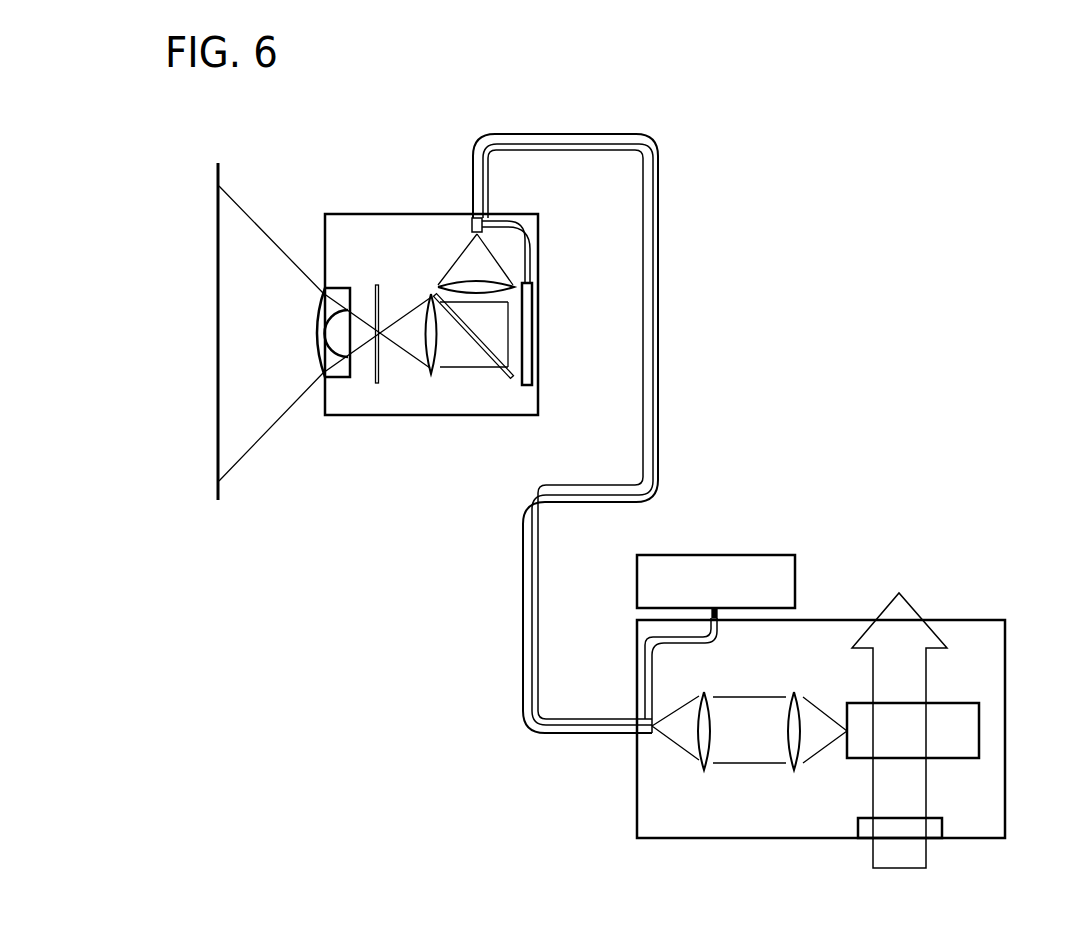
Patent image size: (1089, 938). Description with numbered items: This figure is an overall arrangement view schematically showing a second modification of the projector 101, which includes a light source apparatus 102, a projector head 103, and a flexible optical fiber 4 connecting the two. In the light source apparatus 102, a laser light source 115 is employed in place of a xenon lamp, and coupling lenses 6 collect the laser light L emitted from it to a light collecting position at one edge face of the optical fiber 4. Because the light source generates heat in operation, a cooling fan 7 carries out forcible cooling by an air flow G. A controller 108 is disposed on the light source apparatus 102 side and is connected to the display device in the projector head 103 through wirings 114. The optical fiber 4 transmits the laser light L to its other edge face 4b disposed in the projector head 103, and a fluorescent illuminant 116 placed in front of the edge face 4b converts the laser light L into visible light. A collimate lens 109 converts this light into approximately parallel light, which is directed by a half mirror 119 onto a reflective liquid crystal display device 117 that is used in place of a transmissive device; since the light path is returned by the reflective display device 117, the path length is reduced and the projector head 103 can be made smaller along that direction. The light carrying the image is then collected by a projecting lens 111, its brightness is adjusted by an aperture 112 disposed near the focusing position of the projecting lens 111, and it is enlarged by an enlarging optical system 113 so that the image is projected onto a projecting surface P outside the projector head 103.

The projector 101 is at (743, 136).
The optical fiber 4 is at (598, 132).
The edge face 4b is at (493, 226).
The projecting surface P is at (219, 485).
The projector head 103 is at (343, 213).
The enlarging optical system 113 is at (335, 378).
The aperture 112 is at (377, 384).
The projecting lens 111 is at (432, 375).
The half mirror 119 is at (487, 352).
The collimate lens 109 is at (440, 284).
The fluorescent illuminant 116 is at (470, 229).
The reflective liquid crystal display device 117 is at (528, 337).
The wirings 114 is at (658, 328).
The controller 108 is at (780, 555).
The light source apparatus 102 is at (843, 620).
The coupling lenses 6 is at (703, 773).
The laser light L is at (752, 765).
The laser light source 115 is at (960, 734).
The air flow G is at (928, 660).
The cooling fan 7 is at (942, 826).